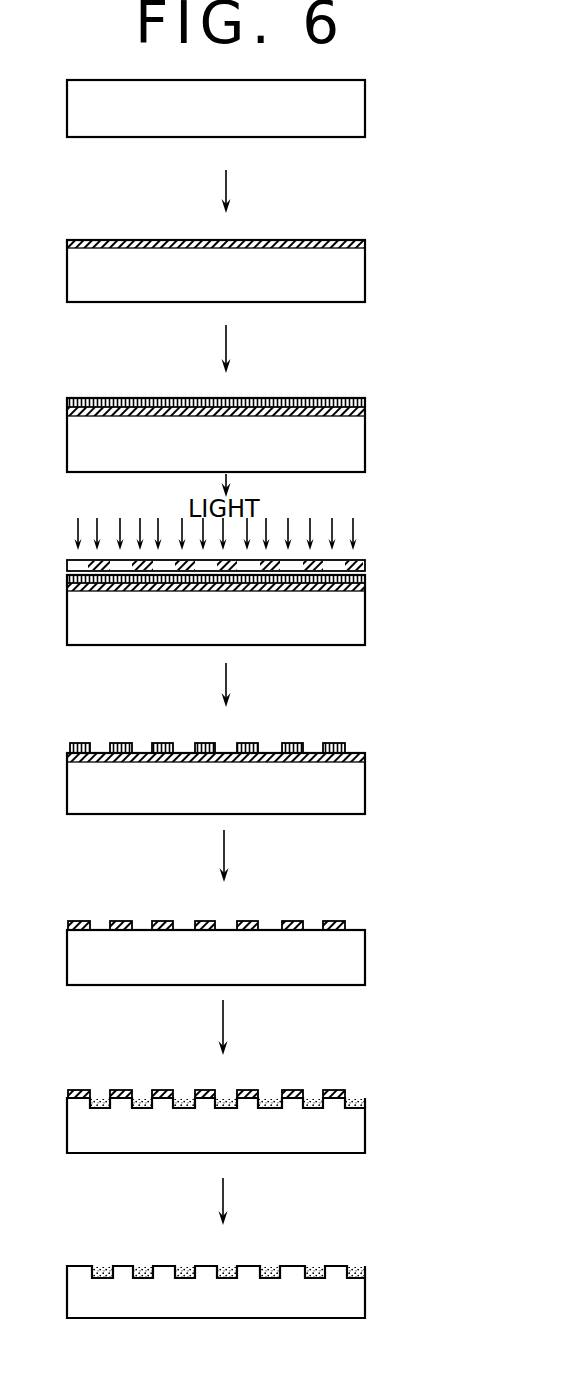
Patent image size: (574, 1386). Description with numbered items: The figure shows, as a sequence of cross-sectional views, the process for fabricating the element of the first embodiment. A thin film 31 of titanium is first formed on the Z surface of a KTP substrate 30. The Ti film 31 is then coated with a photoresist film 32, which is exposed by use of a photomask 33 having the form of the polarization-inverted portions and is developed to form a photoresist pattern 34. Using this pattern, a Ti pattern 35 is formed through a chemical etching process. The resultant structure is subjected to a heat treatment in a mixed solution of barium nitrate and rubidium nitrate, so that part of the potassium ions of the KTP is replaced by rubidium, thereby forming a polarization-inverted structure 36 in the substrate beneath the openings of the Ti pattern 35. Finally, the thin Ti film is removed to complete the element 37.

The KTP substrate 30 is at (358, 113).
The thin film of Ti 31 is at (365, 241).
The photoresist film 32 is at (365, 400).
The photomask 33 is at (365, 562).
The photoresist pattern 34 is at (345, 745).
The Ti pattern 35 is at (355, 925).
The polarization-inverted structure 36 is at (365, 1103).
The element 37 is at (356, 1300).